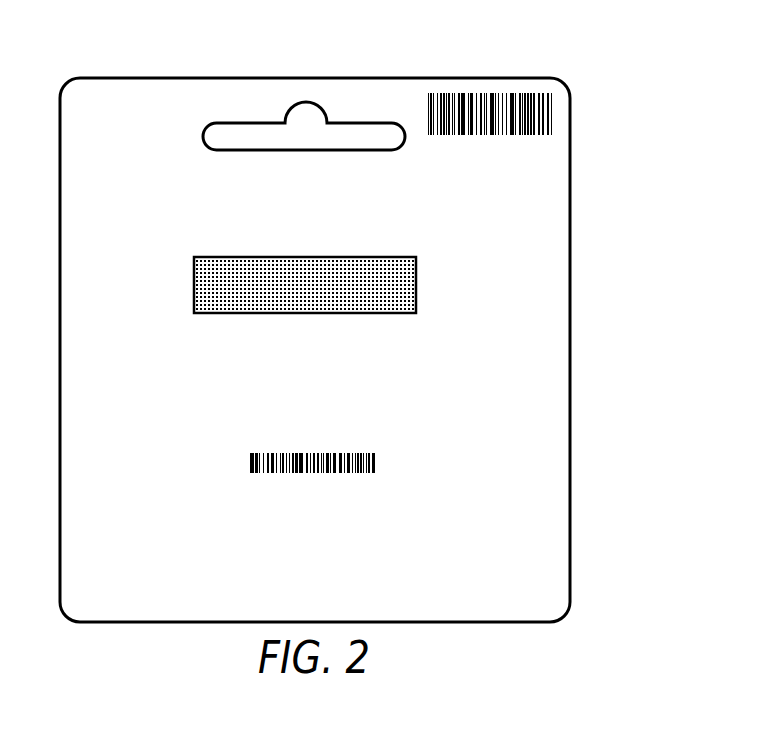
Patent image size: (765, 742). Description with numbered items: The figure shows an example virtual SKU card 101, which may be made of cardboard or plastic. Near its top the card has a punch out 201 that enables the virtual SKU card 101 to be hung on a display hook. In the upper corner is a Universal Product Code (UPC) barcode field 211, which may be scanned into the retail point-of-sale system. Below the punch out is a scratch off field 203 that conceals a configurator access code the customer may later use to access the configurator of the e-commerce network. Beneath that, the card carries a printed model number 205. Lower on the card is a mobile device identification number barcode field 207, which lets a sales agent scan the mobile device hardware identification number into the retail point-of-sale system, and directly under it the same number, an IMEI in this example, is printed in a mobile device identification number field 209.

The virtual SKU card 101 is at (527, 77).
The punch out 201 is at (307, 132).
The scratch off field 203 is at (372, 285).
The printed model number 205 is at (378, 370).
The mobile device identification number barcode field 207 is at (380, 465).
The mobile device identification number field 209 is at (373, 490).
The Universal Product Code (UPC) barcode field 211 is at (537, 110).